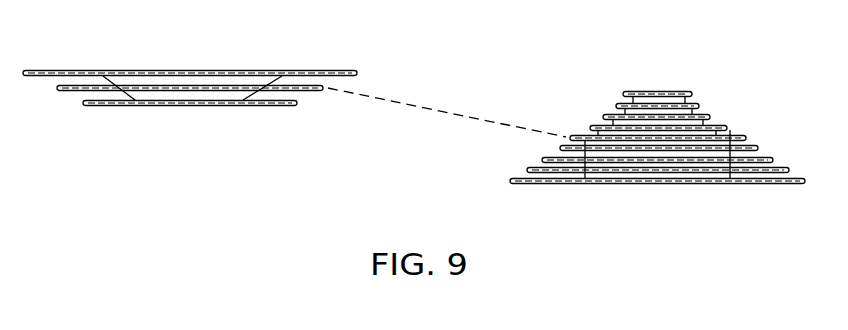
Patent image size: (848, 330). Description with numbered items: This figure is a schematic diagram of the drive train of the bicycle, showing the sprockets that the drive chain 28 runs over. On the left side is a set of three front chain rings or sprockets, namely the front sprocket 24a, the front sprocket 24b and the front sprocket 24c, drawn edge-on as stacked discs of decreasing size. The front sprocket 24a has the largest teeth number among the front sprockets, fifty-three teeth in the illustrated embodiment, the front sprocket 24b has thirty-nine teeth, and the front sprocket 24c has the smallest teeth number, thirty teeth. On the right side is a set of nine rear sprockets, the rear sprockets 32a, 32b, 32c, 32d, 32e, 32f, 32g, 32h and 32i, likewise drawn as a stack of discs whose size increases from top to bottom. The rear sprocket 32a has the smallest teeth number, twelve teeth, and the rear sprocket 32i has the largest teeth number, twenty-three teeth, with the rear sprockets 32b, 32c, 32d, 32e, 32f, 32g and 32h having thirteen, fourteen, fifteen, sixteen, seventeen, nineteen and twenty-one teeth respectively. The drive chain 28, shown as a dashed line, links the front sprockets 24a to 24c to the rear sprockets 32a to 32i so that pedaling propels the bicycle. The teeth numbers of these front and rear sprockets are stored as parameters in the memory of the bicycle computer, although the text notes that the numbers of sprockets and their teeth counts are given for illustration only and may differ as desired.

The front sprocket 24a is at (49, 70).
The front sprocket 24b is at (58, 91).
The front sprocket 24c is at (119, 106).
The drive chain 28 is at (435, 107).
The rear sprocket 32a is at (690, 91).
The rear sprocket 32b is at (618, 103).
The rear sprocket 32c is at (710, 114).
The rear sprocket 32d is at (590, 125).
The rear sprocket 32e is at (743, 135).
The rear sprocket 32f is at (560, 147).
The rear sprocket 32g is at (768, 157).
The rear sprocket 32h is at (527, 169).
The rear sprocket 32i is at (510, 184).